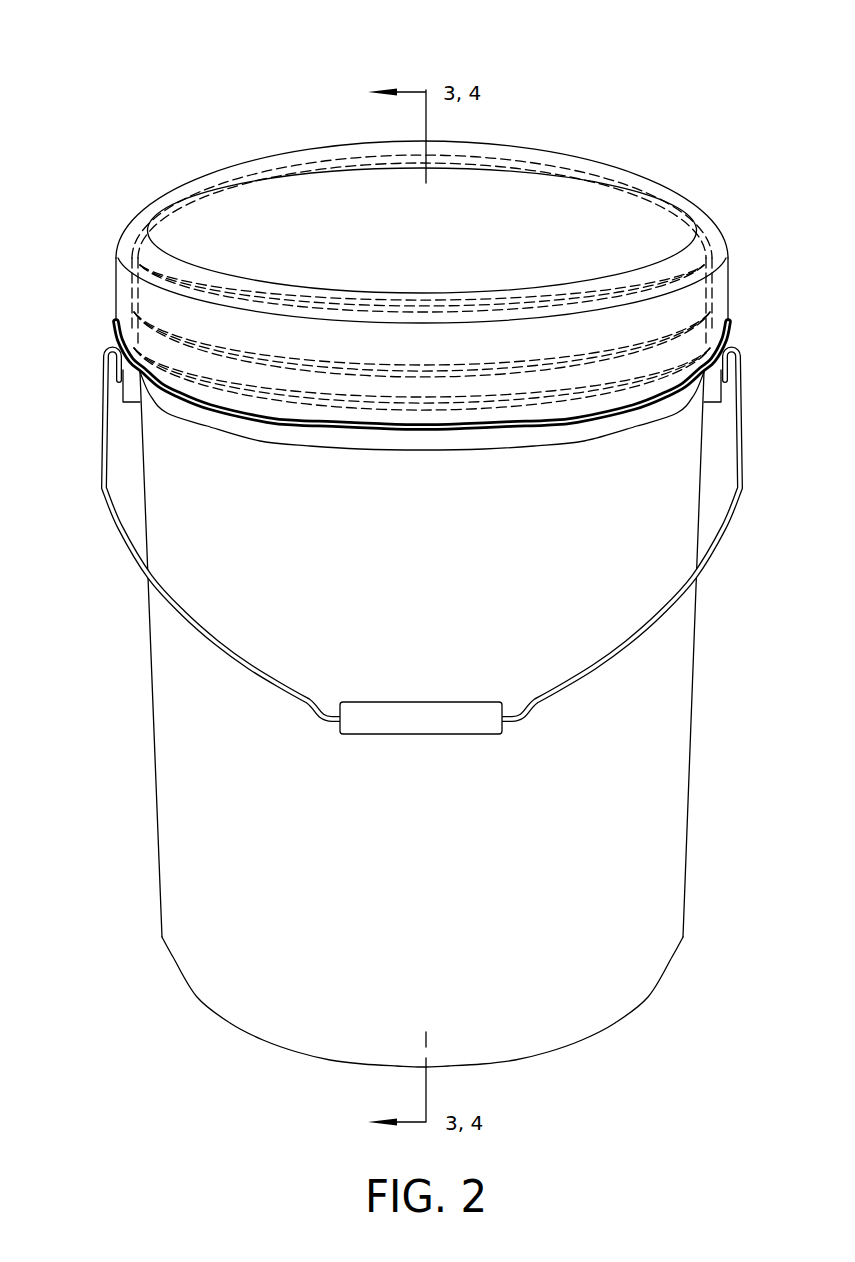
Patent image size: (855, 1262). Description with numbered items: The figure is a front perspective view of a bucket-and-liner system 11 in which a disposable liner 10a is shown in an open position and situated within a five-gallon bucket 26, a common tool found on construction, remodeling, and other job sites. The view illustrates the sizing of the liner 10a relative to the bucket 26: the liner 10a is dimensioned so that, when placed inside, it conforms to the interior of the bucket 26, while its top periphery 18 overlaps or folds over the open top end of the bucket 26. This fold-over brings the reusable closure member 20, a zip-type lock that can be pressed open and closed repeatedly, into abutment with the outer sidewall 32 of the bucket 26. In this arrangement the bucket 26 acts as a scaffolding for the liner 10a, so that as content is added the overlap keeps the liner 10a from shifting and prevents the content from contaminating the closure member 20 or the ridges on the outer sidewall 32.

The bucket-and-liner system 11 is at (421, 549).
The disposable liner 10a is at (156, 190).
The top periphery 18 is at (167, 412).
The reusable closure member 20 is at (670, 398).
The five-gallon bucket 26 is at (683, 892).
The outer sidewall 32 is at (453, 719).